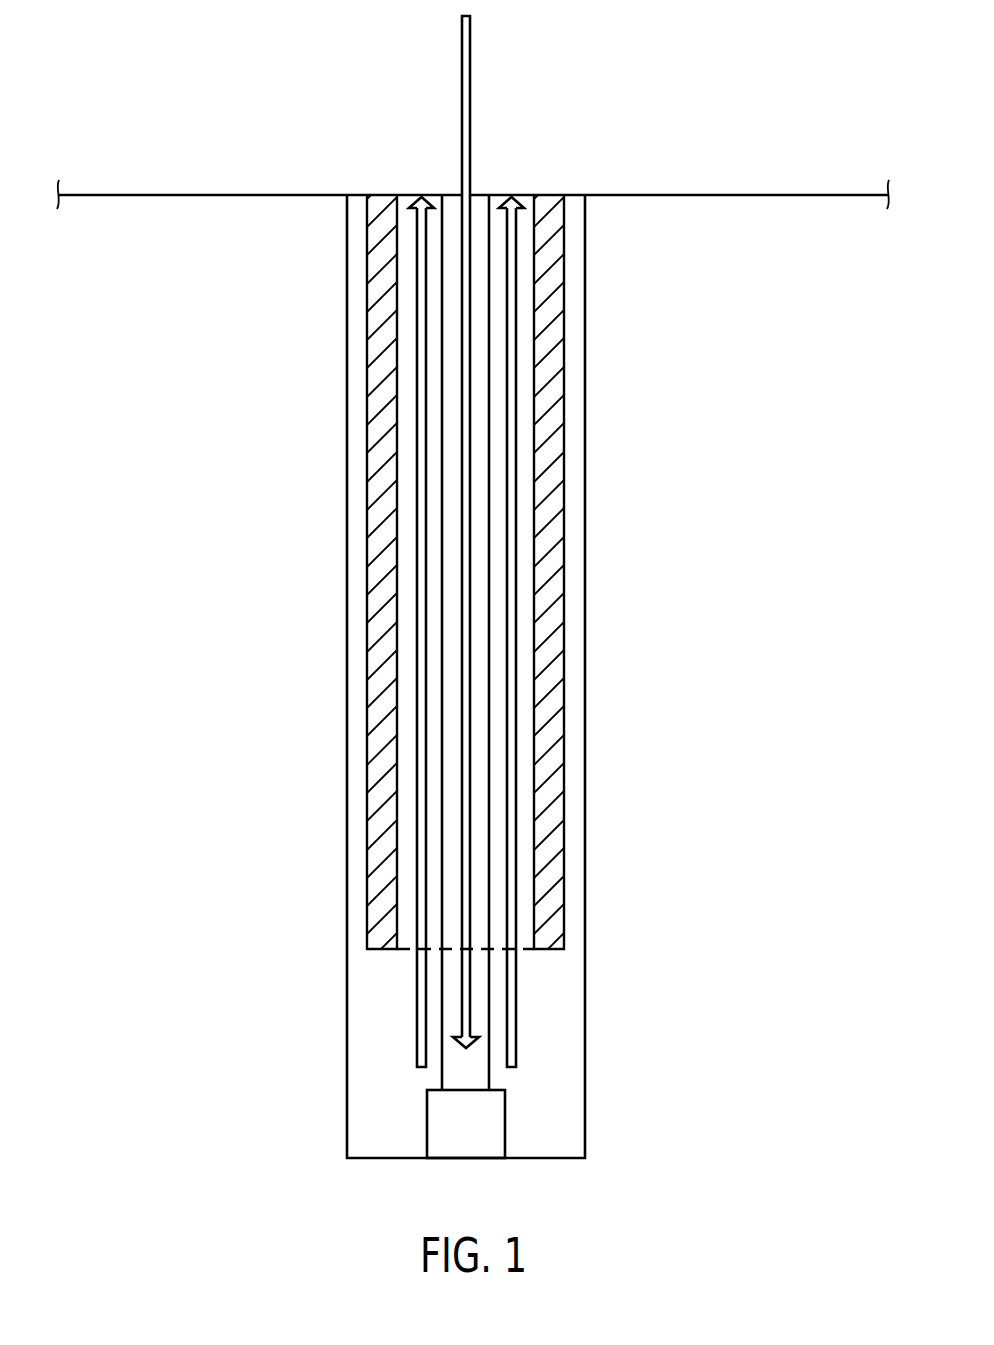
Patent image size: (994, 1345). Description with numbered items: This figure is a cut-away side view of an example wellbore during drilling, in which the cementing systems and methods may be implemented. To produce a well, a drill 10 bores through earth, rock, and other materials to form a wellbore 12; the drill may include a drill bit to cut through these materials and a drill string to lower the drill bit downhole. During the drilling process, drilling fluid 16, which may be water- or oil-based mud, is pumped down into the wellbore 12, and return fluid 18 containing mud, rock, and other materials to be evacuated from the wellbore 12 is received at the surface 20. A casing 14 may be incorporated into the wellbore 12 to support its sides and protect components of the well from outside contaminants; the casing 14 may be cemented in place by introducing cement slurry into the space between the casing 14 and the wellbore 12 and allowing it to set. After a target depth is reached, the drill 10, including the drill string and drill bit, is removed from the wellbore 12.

The drill 10 is at (505, 1122).
The wellbore 12 is at (550, 1058).
The casing 14 is at (383, 842).
The drilling fluid 16 is at (472, 998).
The return fluid 18 is at (417, 998).
The surface 20 is at (148, 195).